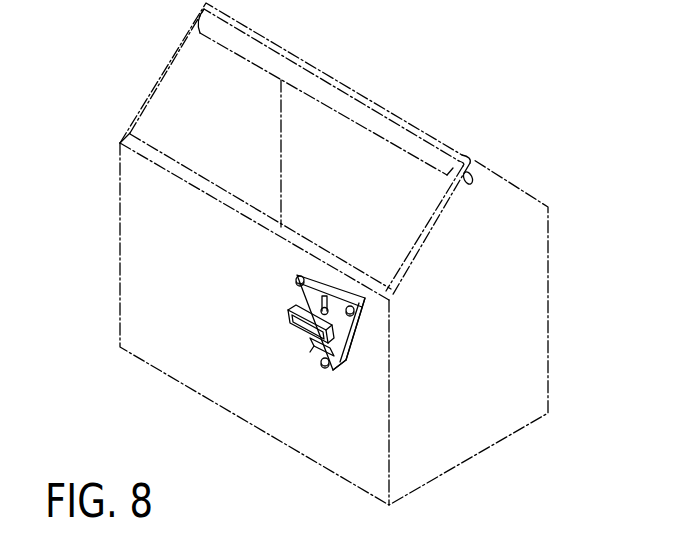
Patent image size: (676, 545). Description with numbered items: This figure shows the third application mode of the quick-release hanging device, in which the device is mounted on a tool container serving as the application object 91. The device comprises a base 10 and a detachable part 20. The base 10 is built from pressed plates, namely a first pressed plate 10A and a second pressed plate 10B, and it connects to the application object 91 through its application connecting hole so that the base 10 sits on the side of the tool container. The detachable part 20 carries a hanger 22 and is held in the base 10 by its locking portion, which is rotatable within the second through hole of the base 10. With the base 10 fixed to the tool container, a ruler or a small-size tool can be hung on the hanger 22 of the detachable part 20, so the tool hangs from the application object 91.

The base 10 is at (340, 280).
The first pressed plate 10A is at (345, 352).
The second pressed plate 10B is at (357, 318).
The detachable part 20 is at (283, 328).
The hanger 22 is at (320, 350).
The application object 91 is at (370, 313).